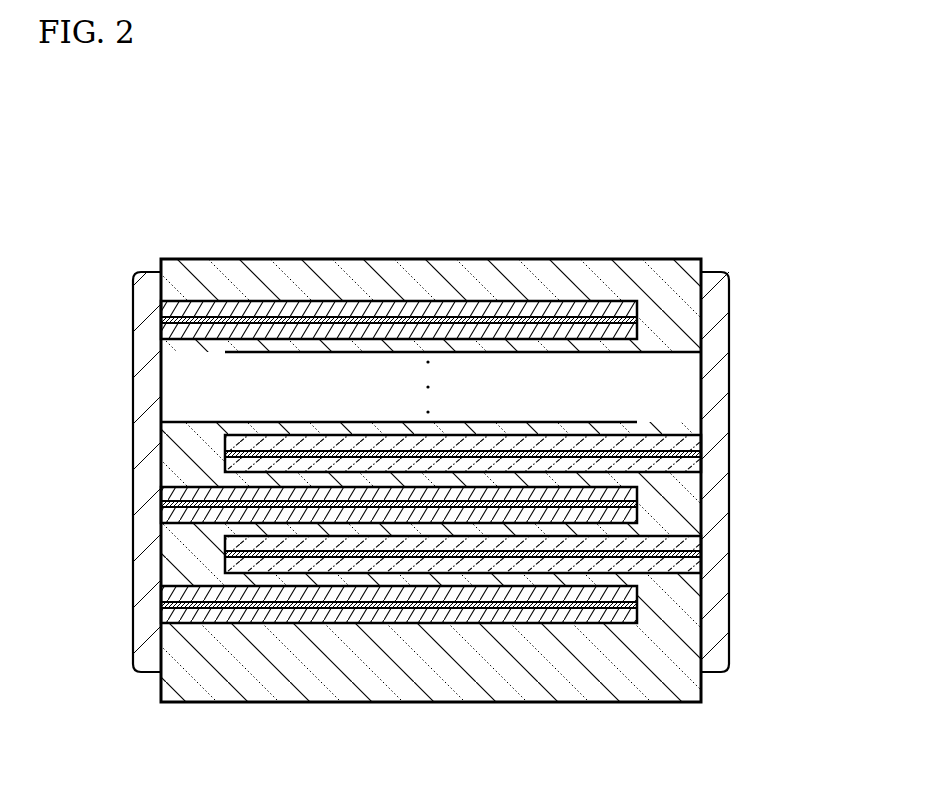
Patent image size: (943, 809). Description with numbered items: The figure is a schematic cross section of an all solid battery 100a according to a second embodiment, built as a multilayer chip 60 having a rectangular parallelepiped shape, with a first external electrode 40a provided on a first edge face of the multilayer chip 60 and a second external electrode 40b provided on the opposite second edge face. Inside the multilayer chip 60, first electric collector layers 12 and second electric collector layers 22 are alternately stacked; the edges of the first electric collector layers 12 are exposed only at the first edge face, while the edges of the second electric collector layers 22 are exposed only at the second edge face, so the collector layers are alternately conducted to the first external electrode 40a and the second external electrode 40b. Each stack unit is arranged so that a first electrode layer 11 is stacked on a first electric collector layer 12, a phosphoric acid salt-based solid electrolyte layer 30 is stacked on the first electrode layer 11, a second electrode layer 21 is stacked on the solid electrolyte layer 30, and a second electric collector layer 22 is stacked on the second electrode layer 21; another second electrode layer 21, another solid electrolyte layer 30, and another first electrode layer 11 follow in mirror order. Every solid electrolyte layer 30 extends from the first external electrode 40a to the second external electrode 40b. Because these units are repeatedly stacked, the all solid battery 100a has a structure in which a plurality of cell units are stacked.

The all solid battery 100a is at (830, 137).
The multilayer chip 60 is at (537, 247).
The first external electrode 40a is at (133, 330).
The second external electrode 40b is at (729, 330).
The first electrode layer 11 is at (163, 487).
The first electric collector layer 12 is at (165, 499).
The second electrode layer 21 is at (697, 538).
The second electric collector layer 22 is at (697, 553).
The solid electrolyte layer 30 is at (326, 580).